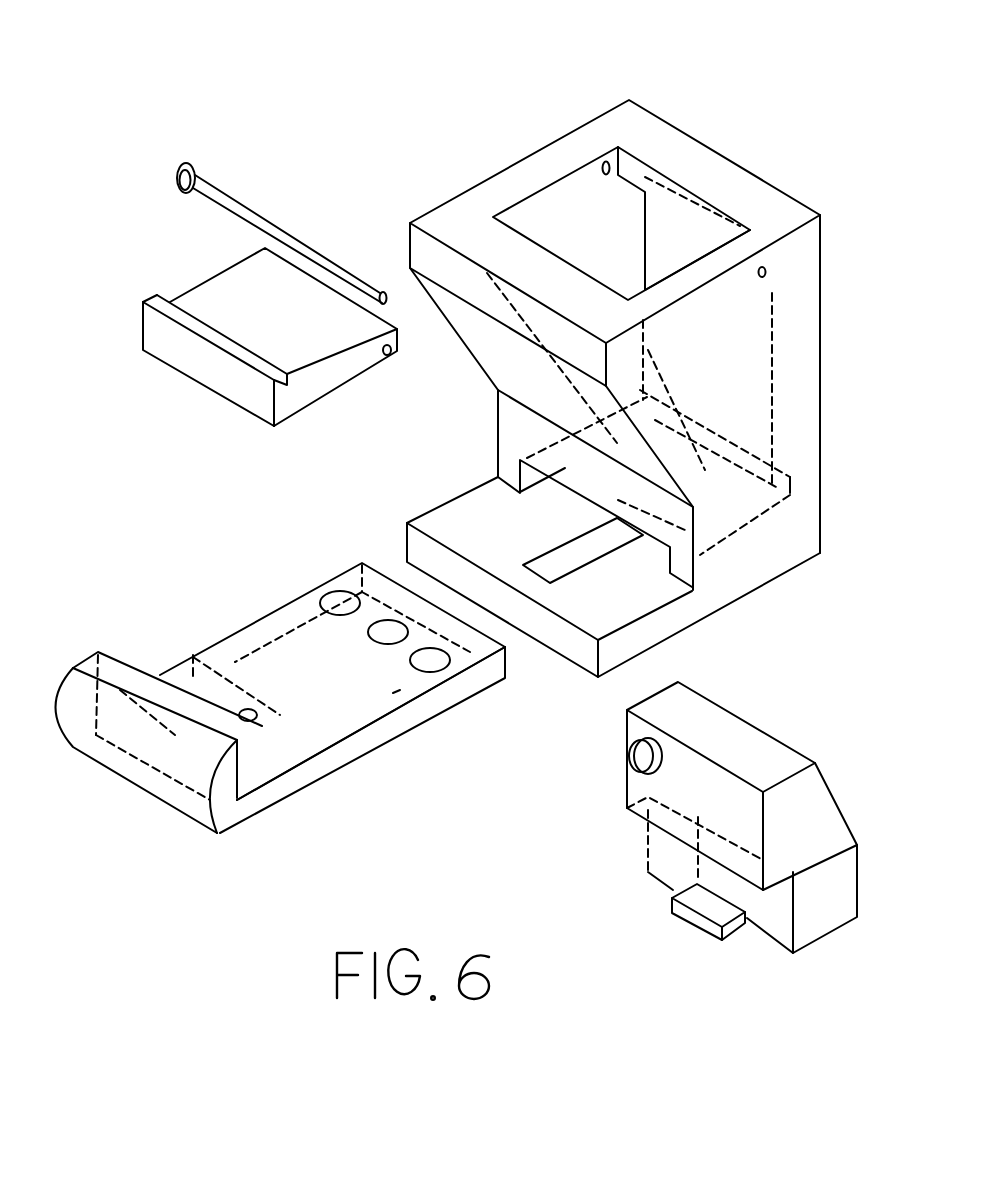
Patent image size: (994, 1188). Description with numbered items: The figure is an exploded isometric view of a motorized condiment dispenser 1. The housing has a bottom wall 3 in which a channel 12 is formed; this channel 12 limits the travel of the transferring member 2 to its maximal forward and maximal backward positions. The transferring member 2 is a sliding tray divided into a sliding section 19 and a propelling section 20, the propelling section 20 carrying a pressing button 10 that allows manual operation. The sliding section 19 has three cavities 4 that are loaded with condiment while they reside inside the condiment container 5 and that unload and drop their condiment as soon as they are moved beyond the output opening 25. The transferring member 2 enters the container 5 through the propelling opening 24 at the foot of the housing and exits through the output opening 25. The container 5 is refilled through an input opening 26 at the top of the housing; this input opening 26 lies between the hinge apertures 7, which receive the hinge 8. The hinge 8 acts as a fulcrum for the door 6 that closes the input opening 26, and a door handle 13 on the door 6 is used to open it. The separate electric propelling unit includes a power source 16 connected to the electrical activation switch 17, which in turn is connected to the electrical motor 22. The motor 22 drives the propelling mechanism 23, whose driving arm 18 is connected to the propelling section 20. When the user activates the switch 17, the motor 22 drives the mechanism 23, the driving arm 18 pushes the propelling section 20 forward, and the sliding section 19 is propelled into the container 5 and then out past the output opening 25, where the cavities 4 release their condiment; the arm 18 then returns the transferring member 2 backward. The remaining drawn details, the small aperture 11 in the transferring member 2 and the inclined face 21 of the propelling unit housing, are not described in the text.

The condiment dispenser 1 is at (720, 172).
The transferring member 2 is at (368, 737).
The bottom wall 3 is at (612, 620).
The cavities 4 is at (434, 661).
The condiment container 5 is at (597, 263).
The door 6 is at (360, 380).
The hinge apertures 7 is at (608, 163).
The hinge 8 is at (245, 212).
The pressing button 10 is at (175, 780).
The hole 11 is at (257, 717).
The channel 12 is at (585, 547).
The door handle 13 is at (243, 360).
The power source 16 is at (712, 722).
The activation switch 17 is at (630, 742).
The driving arm 18 is at (695, 920).
The sliding section 19 is at (393, 693).
The propelling section 20 is at (273, 758).
The inclined face 21 is at (763, 757).
The electrical motor 22 is at (673, 853).
The propelling mechanism 23 is at (777, 927).
The propelling opening 24 is at (573, 507).
The output opening 25 is at (735, 452).
The input opening 26 is at (640, 175).